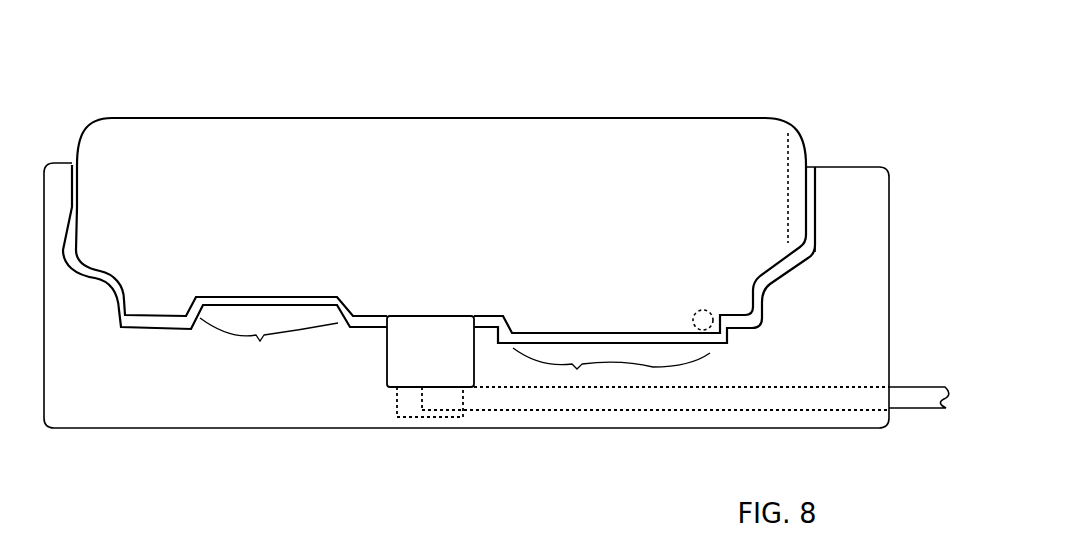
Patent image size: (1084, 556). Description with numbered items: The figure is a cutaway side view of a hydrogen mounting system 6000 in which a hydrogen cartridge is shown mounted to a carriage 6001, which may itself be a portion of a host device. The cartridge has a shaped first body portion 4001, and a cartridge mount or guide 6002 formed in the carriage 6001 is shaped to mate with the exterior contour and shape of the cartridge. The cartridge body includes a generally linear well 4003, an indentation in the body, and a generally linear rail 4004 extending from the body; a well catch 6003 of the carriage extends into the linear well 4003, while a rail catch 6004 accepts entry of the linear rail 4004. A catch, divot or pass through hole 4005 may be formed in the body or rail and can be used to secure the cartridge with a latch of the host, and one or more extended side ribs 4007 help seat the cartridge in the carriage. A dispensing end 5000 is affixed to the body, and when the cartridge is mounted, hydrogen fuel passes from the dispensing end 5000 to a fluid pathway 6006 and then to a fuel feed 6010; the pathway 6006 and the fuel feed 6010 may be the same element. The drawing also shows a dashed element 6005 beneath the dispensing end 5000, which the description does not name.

The first body portion 4001 is at (441, 165).
The linear well 4003 is at (298, 297).
The linear rail 4004 is at (616, 319).
The pass through hole 4005 is at (703, 310).
The extended side rib 4007 is at (793, 180).
The dispensing end 5000 is at (430, 351).
The hydrogen mounting system 6000 is at (672, 89).
The carriage 6001 is at (466, 295).
The cartridge mount or guide 6002 is at (817, 203).
The well catch 6003 is at (269, 345).
The rail catch 6004 is at (611, 368).
The connector 6005 is at (407, 405).
The fluid pathway 6006 is at (760, 387).
The fuel feed 6010 is at (908, 387).